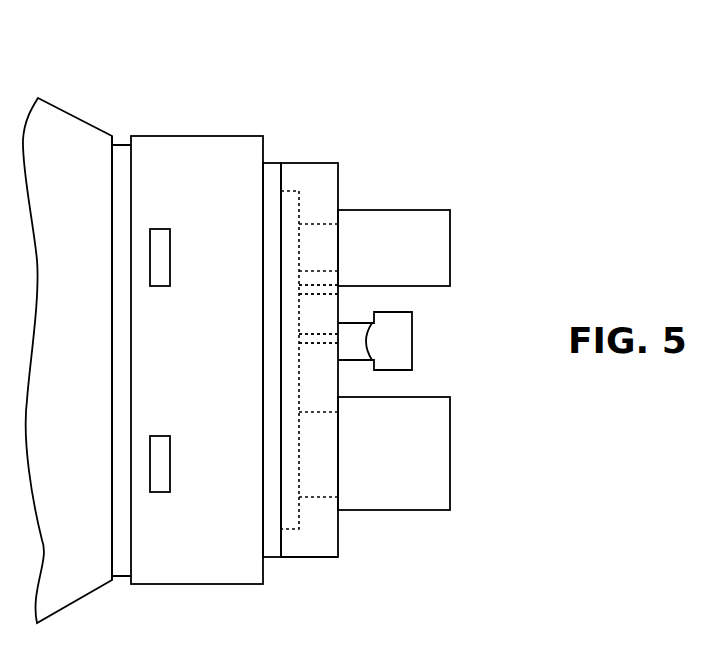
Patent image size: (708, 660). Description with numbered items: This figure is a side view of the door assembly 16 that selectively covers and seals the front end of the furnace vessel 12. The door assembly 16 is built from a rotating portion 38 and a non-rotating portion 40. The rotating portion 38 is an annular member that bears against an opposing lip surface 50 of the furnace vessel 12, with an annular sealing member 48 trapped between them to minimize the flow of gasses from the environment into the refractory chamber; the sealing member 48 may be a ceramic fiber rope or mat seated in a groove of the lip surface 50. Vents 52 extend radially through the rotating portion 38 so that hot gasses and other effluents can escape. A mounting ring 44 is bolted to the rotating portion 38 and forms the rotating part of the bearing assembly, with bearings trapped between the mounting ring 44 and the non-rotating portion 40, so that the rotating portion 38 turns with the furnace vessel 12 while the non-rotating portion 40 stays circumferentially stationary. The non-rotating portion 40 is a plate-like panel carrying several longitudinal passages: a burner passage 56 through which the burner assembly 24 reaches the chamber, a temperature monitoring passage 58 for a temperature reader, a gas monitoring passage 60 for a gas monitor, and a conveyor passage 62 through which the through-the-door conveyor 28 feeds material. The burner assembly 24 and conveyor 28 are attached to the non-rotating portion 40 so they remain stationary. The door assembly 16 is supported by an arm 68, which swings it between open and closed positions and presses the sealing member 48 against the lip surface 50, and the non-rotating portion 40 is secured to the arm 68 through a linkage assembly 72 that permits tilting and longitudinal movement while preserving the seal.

The door assembly 16 is at (354, 90).
The furnace vessel 12 is at (75, 135).
The sealing member 48 is at (122, 155).
The rotating portion 38 is at (167, 155).
The vents 52 is at (160, 234).
The lip surface 50 is at (113, 581).
The mounting ring 44 is at (272, 173).
The non-rotating portion 40 is at (328, 198).
The burner passage 56 is at (318, 235).
The gas monitoring passage 60 is at (318, 297).
The temperature monitoring passage 58 is at (318, 343).
The conveyor passage 62 is at (319, 482).
The burner assembly 24 is at (432, 220).
The through-the-door conveyor 28 is at (431, 500).
The arm 68 is at (401, 339).
The linkage assembly 72 is at (356, 353).